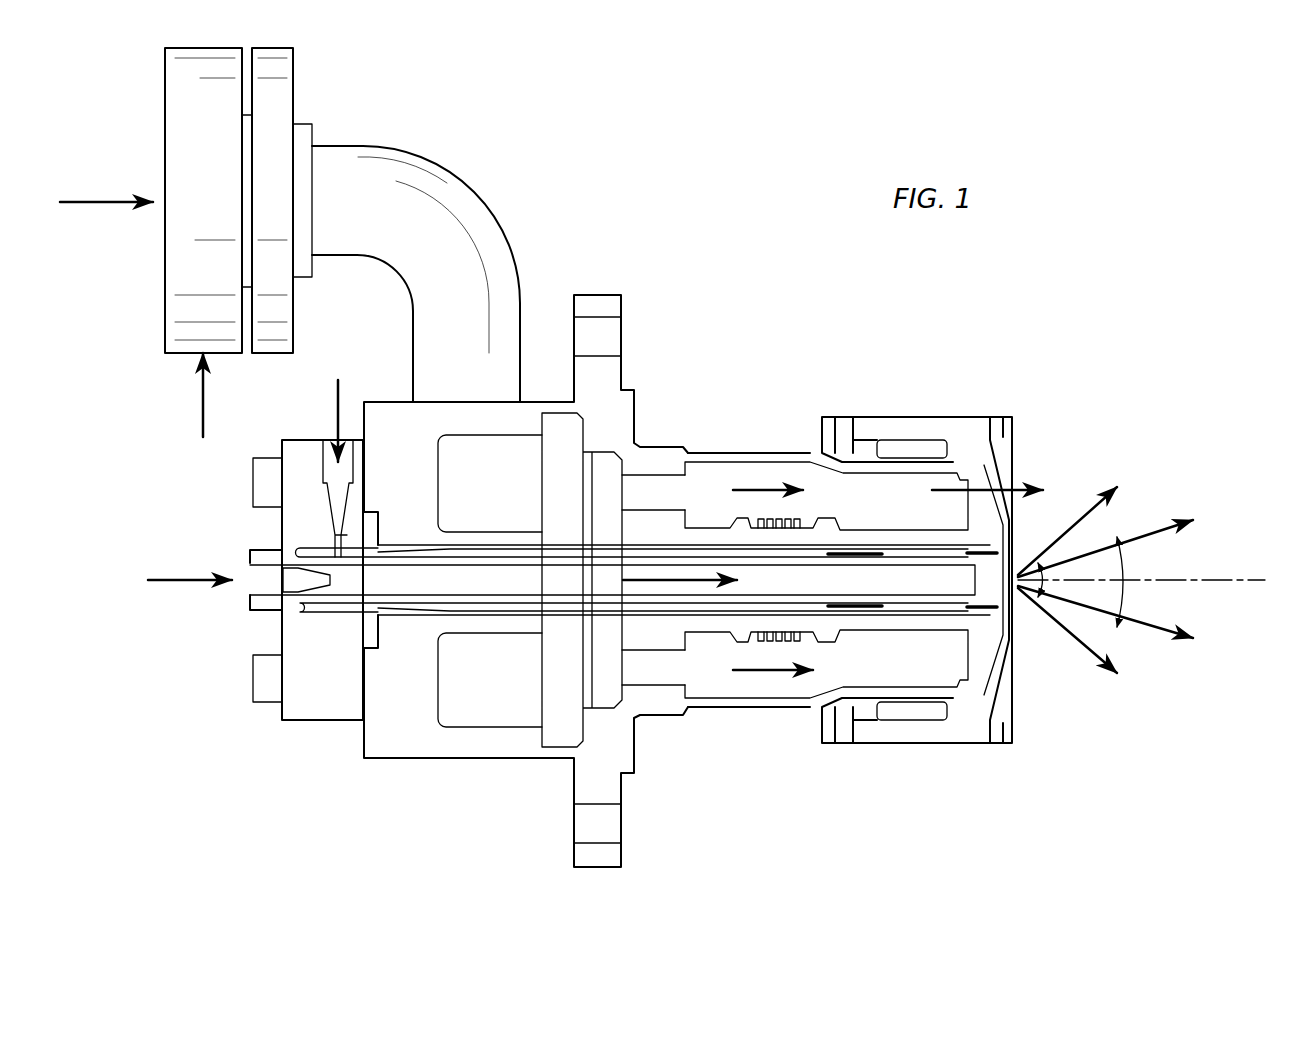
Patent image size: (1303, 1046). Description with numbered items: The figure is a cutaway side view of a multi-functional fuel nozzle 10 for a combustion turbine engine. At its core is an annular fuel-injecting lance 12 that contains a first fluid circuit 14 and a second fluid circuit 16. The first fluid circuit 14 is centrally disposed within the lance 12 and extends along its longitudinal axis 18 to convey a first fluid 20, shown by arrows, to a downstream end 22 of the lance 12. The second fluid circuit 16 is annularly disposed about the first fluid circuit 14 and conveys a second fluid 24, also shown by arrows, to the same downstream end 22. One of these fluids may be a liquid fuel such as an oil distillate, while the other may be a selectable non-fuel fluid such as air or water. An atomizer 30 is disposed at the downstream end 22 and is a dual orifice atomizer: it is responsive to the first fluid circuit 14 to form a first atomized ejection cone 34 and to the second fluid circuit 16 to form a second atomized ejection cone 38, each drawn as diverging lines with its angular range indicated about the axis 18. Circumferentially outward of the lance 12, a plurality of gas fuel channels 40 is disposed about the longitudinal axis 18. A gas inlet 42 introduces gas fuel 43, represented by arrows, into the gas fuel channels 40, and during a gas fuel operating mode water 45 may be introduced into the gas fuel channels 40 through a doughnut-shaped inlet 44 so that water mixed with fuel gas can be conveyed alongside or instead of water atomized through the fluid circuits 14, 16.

The multi-functional fuel nozzle 10 is at (860, 330).
The annular fuel-injecting lance 12 is at (348, 583).
The first fluid circuit 14 is at (477, 580).
The second fluid circuit 16 is at (510, 557).
The longitudinal axis 18 is at (1242, 580).
The first fluid 20 is at (200, 572).
The downstream end 22 is at (1022, 532).
The second fluid 24 is at (855, 553).
The atomizer 30 is at (993, 612).
The first atomized ejection cone 34 is at (1088, 502).
The second atomized ejection cone 38 is at (1153, 520).
The gas fuel channels 40 is at (715, 480).
The gas inlet 42 is at (323, 182).
The gas fuel 43 is at (93, 200).
The doughnut-shaped inlet 44 is at (165, 132).
The water 45 is at (203, 395).